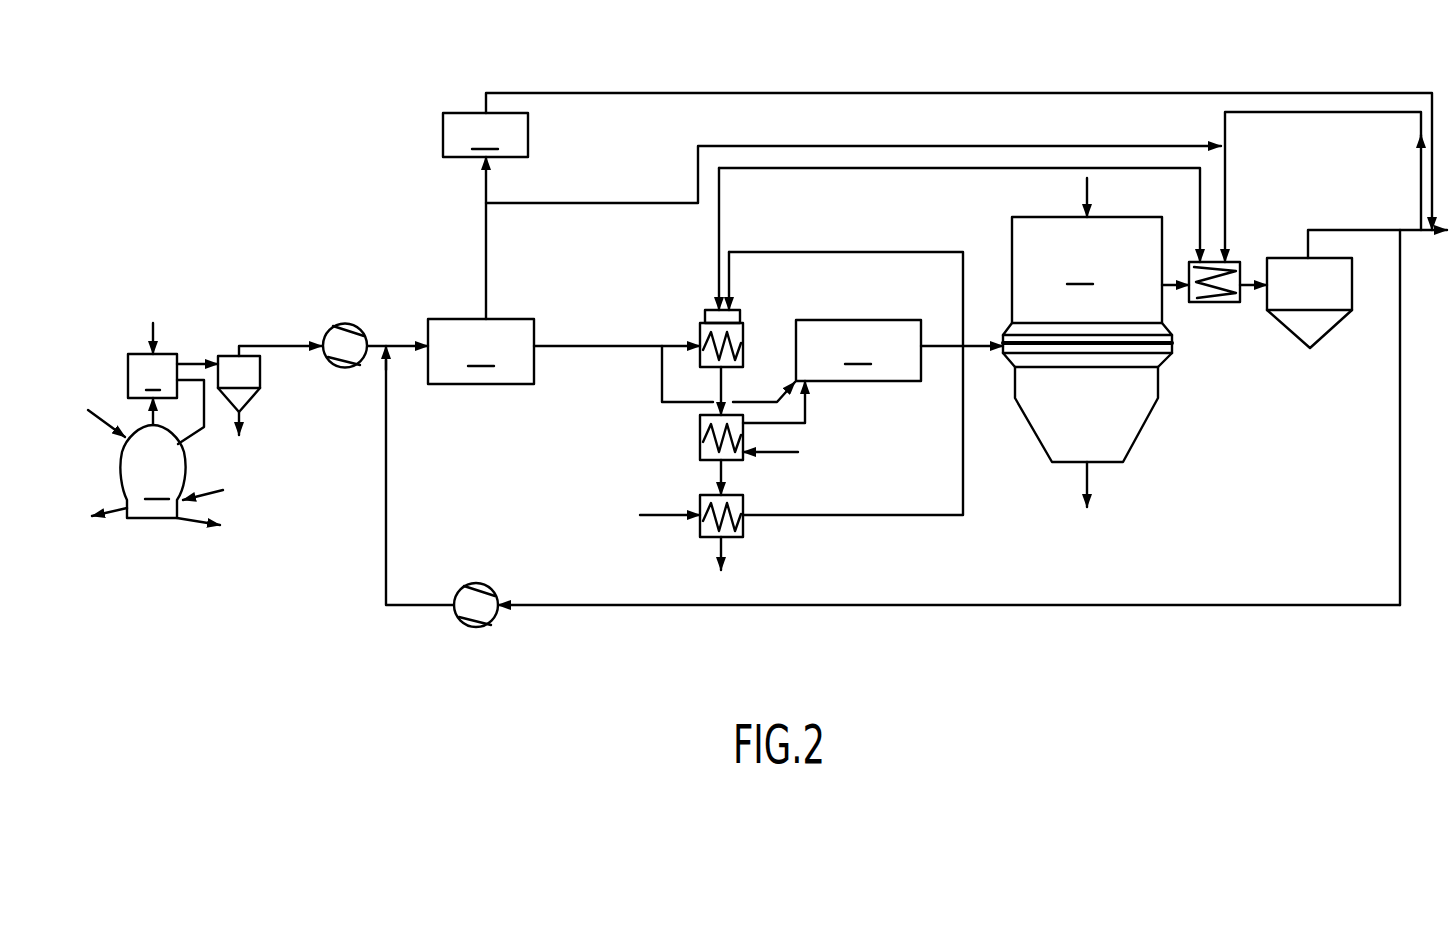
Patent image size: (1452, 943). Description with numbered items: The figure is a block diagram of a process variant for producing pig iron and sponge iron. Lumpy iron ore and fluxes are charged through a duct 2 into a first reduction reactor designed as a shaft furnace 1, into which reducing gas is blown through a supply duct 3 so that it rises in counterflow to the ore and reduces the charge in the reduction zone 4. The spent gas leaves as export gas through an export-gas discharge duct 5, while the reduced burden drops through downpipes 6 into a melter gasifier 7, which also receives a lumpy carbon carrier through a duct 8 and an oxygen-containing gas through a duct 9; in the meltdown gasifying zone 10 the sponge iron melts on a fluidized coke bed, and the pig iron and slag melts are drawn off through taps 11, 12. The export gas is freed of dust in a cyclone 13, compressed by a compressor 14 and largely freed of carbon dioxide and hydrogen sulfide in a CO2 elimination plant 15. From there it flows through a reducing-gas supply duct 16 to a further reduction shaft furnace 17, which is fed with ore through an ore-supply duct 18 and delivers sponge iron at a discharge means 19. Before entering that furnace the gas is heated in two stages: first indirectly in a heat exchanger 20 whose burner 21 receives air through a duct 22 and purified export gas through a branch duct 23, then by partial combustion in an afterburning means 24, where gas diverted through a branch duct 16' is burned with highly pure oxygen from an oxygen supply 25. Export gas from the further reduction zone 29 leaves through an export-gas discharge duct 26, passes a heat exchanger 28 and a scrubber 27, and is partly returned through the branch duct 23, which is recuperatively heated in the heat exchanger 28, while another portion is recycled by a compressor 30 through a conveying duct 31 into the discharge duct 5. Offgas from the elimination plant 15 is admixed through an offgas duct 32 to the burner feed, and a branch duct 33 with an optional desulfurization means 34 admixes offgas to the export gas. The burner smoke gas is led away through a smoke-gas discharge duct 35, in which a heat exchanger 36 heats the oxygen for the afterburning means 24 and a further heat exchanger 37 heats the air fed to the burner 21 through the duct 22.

The shaft furnace 1 is at (140, 354).
The duct 2 is at (153, 323).
The supply duct 3 is at (204, 427).
The reduction zone 4 is at (152, 376).
The export-gas discharge duct 5 is at (239, 342).
The downpipes 6 is at (155, 402).
The melter gasifier 7 is at (158, 443).
The duct 8 is at (88, 410).
The duct 9 is at (223, 490).
The meltdown gasifying zone 10 is at (152, 471).
The tap 11 is at (212, 527).
The tap 12 is at (112, 512).
The cyclone 13 is at (250, 388).
The compressor 14 is at (353, 335).
The CO2 elimination plant 15 is at (481, 351).
The reducing-gas supply duct 16 is at (617, 316).
The branch duct 16' is at (699, 374).
The reduction shaft furnace 17 is at (1032, 425).
The ore-supply duct 18 is at (1087, 185).
The discharge means 19 is at (1087, 475).
The heat exchanger 20 is at (702, 327).
The burner 21 is at (703, 312).
The duct 22 is at (850, 252).
The branch duct 23 is at (719, 213).
The afterburning means 24 is at (899, 350).
The oxygen supply 25 is at (807, 413).
The export-gas discharge duct 26 is at (1177, 292).
The scrubber 27 is at (1302, 328).
The heat exchanger 28 is at (1240, 262).
The further reduction zone 29 is at (1087, 285).
The compressor 30 is at (490, 612).
The conveying duct 31 is at (910, 605).
The offgas duct 32 is at (486, 184).
The branch duct 33 is at (825, 93).
The desulfurization means 34 is at (485, 135).
The smoke-gas discharge duct 35 is at (716, 543).
The heat exchanger 36 is at (700, 422).
The further heat exchanger 37 is at (743, 523).